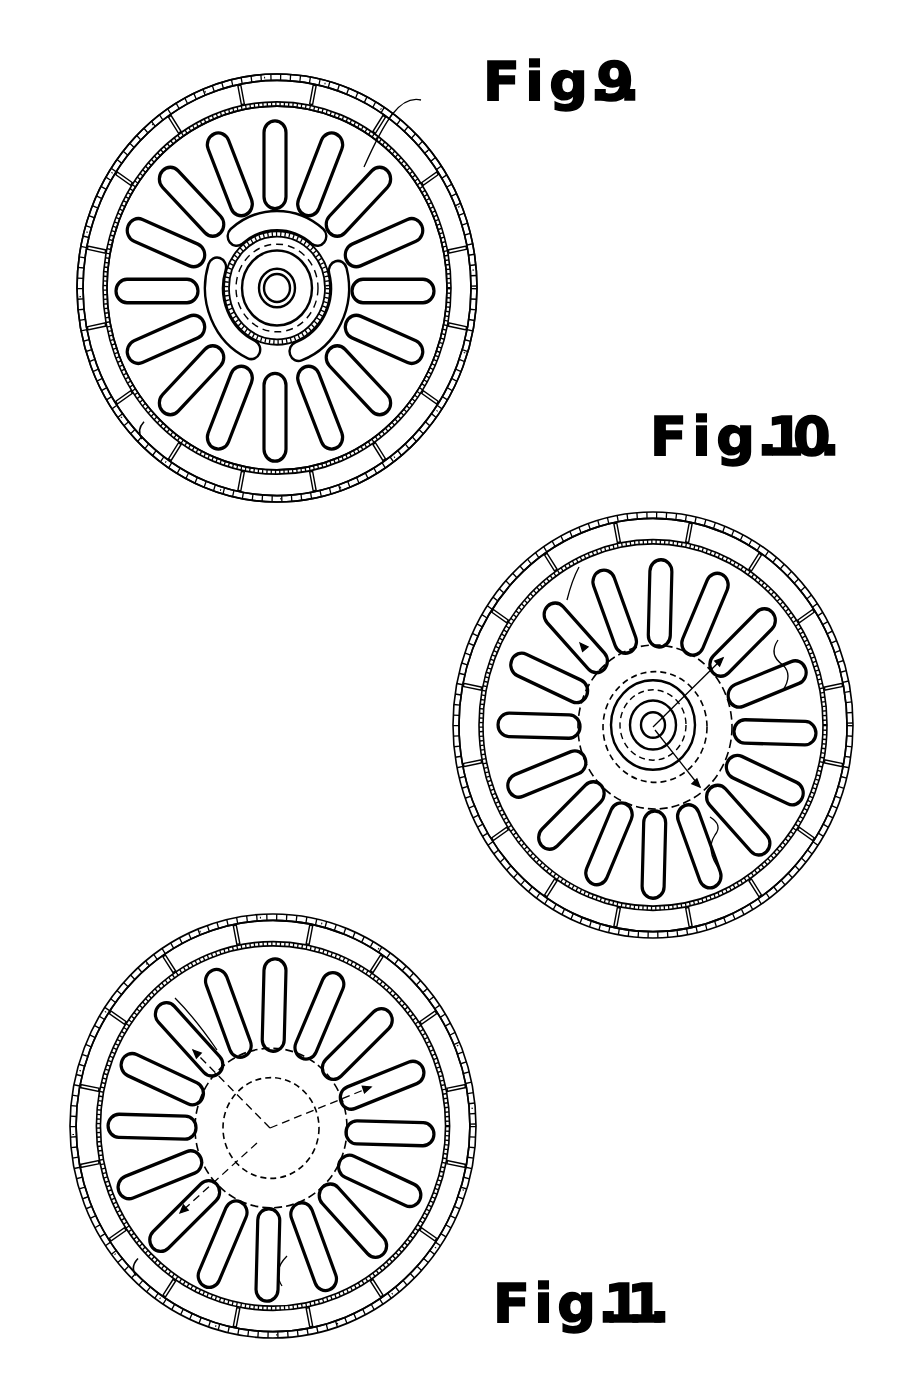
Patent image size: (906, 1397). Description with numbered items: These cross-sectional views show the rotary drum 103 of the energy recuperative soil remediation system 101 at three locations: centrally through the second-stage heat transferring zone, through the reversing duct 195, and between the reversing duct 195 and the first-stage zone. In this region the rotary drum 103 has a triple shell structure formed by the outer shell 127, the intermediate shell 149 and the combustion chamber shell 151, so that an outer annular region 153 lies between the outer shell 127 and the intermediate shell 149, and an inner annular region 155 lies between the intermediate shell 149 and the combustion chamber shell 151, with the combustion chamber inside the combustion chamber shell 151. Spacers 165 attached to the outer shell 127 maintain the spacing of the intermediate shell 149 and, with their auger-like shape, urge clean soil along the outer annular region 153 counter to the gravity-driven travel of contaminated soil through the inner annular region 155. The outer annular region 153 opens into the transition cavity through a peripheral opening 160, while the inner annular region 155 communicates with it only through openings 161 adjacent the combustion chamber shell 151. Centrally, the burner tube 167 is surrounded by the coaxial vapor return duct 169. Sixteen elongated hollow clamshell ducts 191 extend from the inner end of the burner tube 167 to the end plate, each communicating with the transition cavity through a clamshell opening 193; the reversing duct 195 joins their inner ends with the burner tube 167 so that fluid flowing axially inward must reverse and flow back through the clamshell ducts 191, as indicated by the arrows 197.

In FIG. 9, the energy recuperative soil remediation system 101 is at (402, 57).
In FIG. 10, the energy recuperative soil remediation system 101 is at (829, 545).
In FIG. 11, the energy recuperative soil remediation system 101 is at (159, 898).
In FIG. 9, the rotary drum 103 is at (320, 78).
In FIG. 9, the outer shell 127 is at (470, 357).
In FIG. 10, the outer shell 127 is at (527, 582).
In FIG. 11, the outer shell 127 is at (470, 1188).
In FIG. 9, the intermediate shell 149 is at (425, 175).
In FIG. 10, the intermediate shell 149 is at (480, 637).
In FIG. 11, the intermediate shell 149 is at (240, 1312).
In FIG. 9, the combustion chamber shell 151 is at (267, 315).
In FIG. 10, the combustion chamber shell 151 is at (668, 728).
In FIG. 11, the combustion chamber shell 151 is at (140, 968).
In FIG. 9, the outer annular region 153 is at (200, 103).
In FIG. 10, the outer annular region 153 is at (658, 912).
In FIG. 11, the outer annular region 153 is at (447, 1080).
In FIG. 9, the inner annular region 155 is at (252, 128).
In FIG. 10, the inner annular region 155 is at (690, 577).
In FIG. 11, the inner annular region 155 is at (297, 984).
In FIG. 9, the peripheral opening 160 is at (135, 160).
In FIG. 9, the openings 161 is at (418, 418).
In FIG. 9, the spacers 165 is at (131, 430).
In FIG. 11, the spacers 165 is at (122, 1240).
In FIG. 9, the burner tube 167 is at (262, 278).
In FIG. 10, the burner tube 167 is at (632, 728).
In FIG. 9, the vapor return duct 169 is at (267, 310).
In FIG. 10, the vapor return duct 169 is at (632, 753).
In FIG. 9, the clamshell ducts 191 is at (412, 126).
In FIG. 10, the clamshell ducts 191 is at (778, 660).
In FIG. 11, the clamshell ducts 191 is at (376, 1040).
In FIG. 9, the clamshell openings 193 is at (407, 343).
In FIG. 10, the clamshell openings 193 is at (653, 727).
In FIG. 10, the reversing duct 195 is at (700, 787).
In FIG. 11, the reversing duct 195 is at (252, 1057).
In FIG. 10, the arrows indicating flow through clamshell ducts 197 is at (645, 655).
In FIG. 11, the arrows indicating flow through clamshell ducts 197 is at (105, 1062).